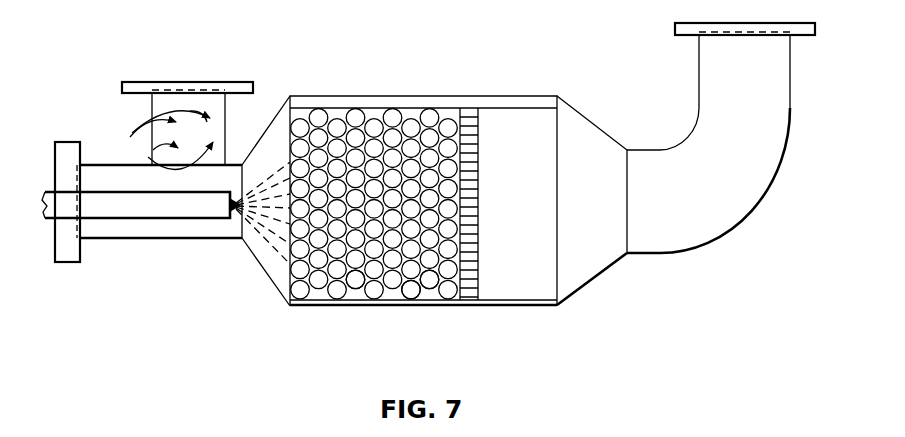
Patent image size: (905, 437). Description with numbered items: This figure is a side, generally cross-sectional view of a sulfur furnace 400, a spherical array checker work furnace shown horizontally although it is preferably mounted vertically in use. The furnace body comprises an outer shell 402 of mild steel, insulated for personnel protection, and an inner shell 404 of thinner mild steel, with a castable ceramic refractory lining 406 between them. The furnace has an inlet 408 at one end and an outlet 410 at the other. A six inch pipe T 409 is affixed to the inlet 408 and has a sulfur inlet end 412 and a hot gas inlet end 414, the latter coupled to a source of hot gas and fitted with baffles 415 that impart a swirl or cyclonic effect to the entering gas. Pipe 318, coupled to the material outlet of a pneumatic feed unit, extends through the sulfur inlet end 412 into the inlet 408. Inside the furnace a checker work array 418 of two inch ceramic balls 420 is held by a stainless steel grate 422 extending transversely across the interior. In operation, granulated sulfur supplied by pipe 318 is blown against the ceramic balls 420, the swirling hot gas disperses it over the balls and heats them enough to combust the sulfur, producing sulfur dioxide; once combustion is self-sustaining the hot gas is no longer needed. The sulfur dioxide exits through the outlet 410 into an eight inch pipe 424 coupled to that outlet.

The pipe 318 is at (50, 219).
The sulfur furnace 400 is at (614, 318).
The outer shell 402 is at (348, 96).
The inner shell 404 is at (380, 108).
The refractory lining 406 is at (410, 104).
The inlet 408 is at (272, 122).
The pipe T 409 is at (85, 164).
The outlet 410 is at (584, 107).
The sulfur inlet end 412 is at (55, 155).
The hot gas inlet end 414 is at (228, 82).
The baffles 415 is at (156, 152).
The checker work array 418 is at (356, 306).
The ceramic balls 420 is at (416, 294).
The stainless steel grate 422 is at (482, 127).
The pipe 424 is at (680, 140).